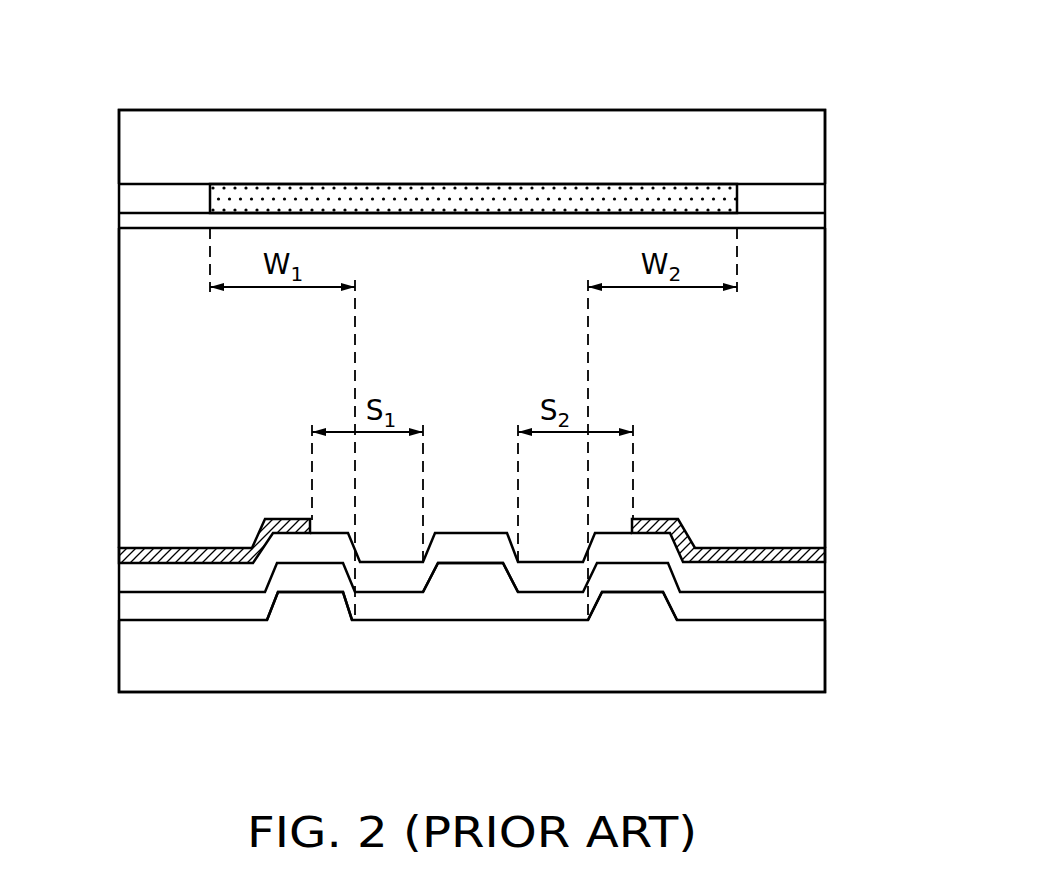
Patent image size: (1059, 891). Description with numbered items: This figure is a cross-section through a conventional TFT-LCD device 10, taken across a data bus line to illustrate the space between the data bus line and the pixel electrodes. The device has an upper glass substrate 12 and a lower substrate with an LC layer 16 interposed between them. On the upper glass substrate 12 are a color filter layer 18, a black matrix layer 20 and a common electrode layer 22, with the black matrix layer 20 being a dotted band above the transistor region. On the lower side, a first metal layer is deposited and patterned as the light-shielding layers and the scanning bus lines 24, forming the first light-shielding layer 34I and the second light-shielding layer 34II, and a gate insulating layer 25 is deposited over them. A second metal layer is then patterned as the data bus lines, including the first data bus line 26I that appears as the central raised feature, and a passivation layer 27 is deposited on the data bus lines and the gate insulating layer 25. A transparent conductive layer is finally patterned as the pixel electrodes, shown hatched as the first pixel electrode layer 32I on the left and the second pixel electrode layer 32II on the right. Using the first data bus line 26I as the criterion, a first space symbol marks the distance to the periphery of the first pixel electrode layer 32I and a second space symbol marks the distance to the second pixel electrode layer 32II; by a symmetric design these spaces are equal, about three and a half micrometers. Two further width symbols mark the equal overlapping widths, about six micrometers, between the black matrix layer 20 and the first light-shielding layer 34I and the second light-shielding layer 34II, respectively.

The TFT-LCD device 10 is at (679, 81).
The upper glass substrate 12 is at (818, 151).
The LC layer 16 is at (818, 403).
The color filter layer 18 is at (818, 196).
The black matrix layer 20 is at (208, 198).
The common electrode layer 22 is at (818, 219).
The scanning bus line 24 is at (818, 657).
The gate insulating layer 25 is at (818, 605).
The first data bus line 26I is at (470, 578).
The passivation layer 27 is at (818, 577).
The first pixel electrode layer 32I is at (119, 555).
The second pixel electrode layer 32II is at (820, 555).
The first light-shielding layer 34I is at (310, 685).
The second light-shielding layer 34II is at (632, 685).